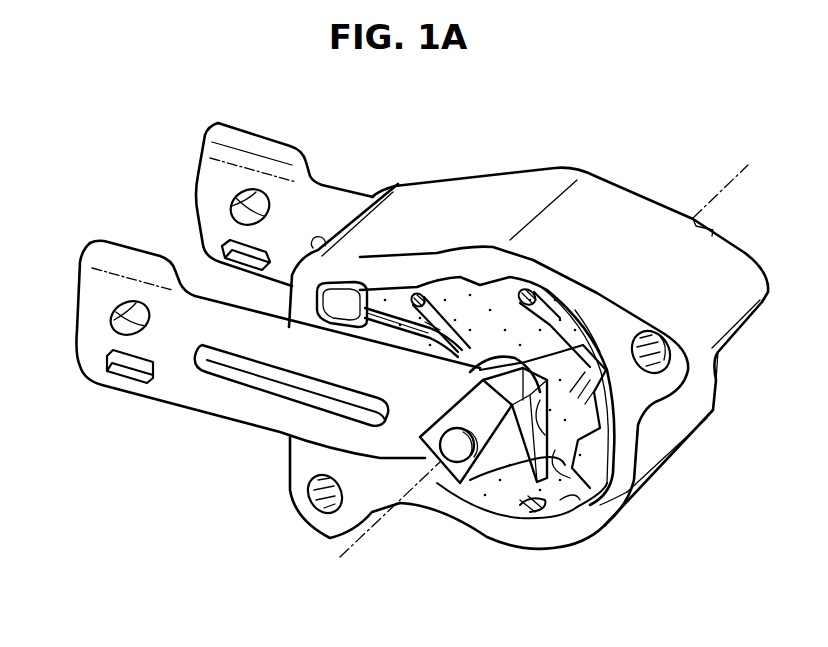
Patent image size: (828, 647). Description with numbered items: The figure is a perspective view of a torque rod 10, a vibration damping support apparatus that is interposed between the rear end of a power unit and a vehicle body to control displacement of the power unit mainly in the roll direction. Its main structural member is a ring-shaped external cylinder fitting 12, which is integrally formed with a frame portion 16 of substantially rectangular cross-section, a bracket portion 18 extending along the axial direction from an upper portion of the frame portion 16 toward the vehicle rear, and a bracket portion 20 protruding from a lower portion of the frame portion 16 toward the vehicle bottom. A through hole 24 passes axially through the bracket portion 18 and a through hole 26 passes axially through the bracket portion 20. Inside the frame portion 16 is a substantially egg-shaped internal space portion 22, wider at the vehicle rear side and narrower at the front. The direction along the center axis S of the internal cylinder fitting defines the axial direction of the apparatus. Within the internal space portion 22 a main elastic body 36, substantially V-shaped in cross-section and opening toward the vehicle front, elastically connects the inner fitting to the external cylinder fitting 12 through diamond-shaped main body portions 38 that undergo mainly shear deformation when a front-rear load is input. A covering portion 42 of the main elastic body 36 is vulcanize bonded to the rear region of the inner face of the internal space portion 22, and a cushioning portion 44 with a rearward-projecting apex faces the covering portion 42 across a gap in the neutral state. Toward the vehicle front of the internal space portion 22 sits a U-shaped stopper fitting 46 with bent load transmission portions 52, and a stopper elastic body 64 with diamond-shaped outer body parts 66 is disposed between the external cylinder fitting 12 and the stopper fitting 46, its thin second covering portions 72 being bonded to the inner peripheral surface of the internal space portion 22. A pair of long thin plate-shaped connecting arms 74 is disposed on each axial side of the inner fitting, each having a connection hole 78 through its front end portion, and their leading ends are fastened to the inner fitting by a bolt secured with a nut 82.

The torque rod 10 is at (637, 90).
The external cylinder fitting 12 is at (702, 447).
The frame portion 16 is at (530, 538).
The bracket portion 18 is at (672, 396).
The bracket portion 20 is at (300, 520).
The internal space portion 22 is at (573, 495).
The through hole 24 is at (665, 334).
The through hole 26 is at (327, 518).
The main elastic body 36 is at (570, 310).
The main body portion 38 is at (520, 313).
The covering portion 42 is at (610, 487).
The cushioning portion 44 is at (600, 408).
The stopper fitting 46 is at (392, 310).
The load transmission portion 52 is at (384, 306).
The stopper elastic body 64 is at (443, 317).
The outer body part 66 is at (437, 320).
The second covering portion 72 is at (314, 310).
The connecting arm 74 is at (221, 118).
The connection hole 78 is at (234, 200).
The nut 82 is at (447, 408).
The center axis S is at (357, 549).